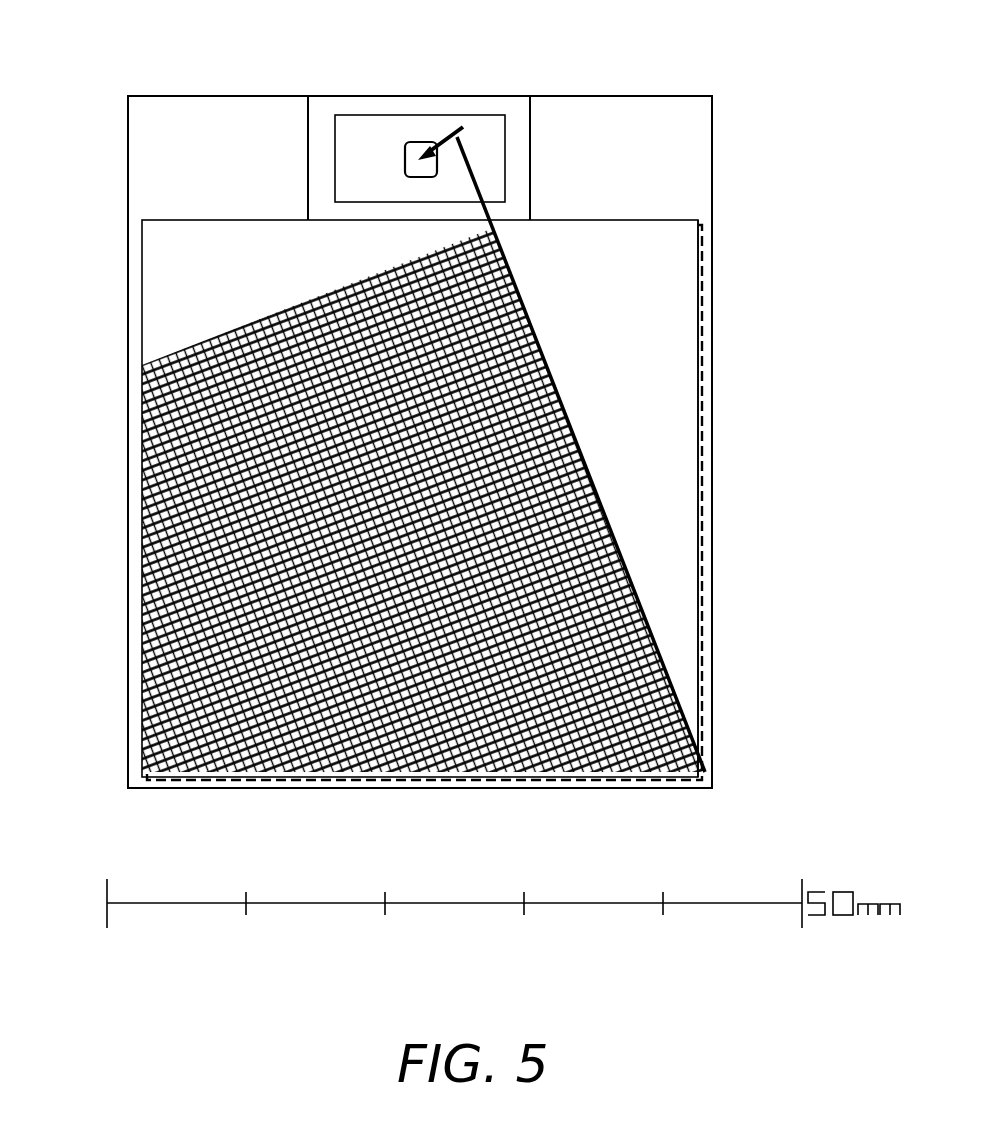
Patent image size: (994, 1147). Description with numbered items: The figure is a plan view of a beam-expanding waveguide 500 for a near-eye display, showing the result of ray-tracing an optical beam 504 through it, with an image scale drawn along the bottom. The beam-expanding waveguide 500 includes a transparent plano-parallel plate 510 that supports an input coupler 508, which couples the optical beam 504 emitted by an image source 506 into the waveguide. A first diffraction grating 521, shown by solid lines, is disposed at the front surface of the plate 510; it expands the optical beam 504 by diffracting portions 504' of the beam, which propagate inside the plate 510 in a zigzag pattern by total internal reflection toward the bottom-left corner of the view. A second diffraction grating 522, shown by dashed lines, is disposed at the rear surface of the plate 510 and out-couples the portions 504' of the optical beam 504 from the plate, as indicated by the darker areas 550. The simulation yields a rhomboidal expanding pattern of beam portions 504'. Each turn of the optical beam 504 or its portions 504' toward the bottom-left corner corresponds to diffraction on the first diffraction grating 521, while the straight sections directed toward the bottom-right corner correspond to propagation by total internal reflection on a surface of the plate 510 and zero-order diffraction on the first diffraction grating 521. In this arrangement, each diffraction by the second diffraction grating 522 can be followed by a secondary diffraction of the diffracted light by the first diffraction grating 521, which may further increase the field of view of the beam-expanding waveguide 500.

The beam-expanding waveguide 500 is at (712, 378).
The optical beam 504 is at (561, 394).
The portions of the optical beam 504' is at (120, 284).
The image source 506 is at (423, 141).
The input coupler 508 is at (363, 135).
The transparent plano-parallel plate 510 is at (660, 170).
The first diffraction grating 521 is at (698, 465).
The second diffraction grating 522 is at (702, 530).
The darker areas 550 is at (348, 590).